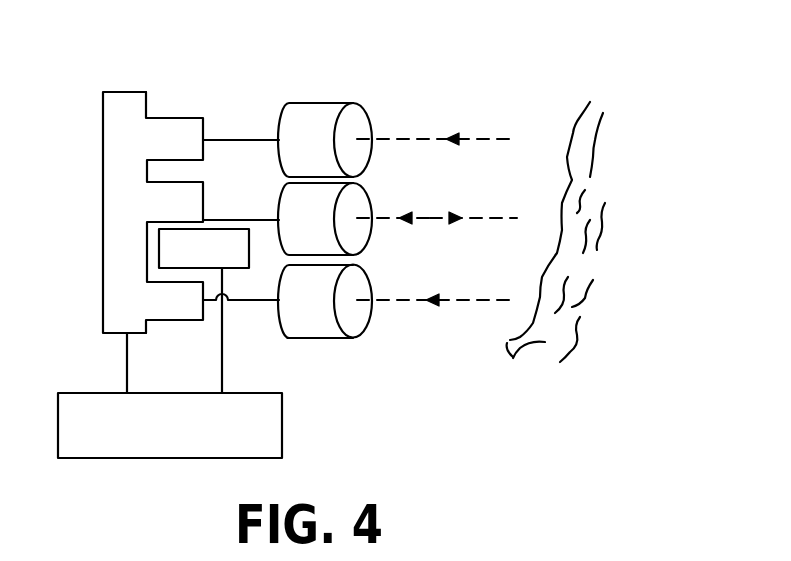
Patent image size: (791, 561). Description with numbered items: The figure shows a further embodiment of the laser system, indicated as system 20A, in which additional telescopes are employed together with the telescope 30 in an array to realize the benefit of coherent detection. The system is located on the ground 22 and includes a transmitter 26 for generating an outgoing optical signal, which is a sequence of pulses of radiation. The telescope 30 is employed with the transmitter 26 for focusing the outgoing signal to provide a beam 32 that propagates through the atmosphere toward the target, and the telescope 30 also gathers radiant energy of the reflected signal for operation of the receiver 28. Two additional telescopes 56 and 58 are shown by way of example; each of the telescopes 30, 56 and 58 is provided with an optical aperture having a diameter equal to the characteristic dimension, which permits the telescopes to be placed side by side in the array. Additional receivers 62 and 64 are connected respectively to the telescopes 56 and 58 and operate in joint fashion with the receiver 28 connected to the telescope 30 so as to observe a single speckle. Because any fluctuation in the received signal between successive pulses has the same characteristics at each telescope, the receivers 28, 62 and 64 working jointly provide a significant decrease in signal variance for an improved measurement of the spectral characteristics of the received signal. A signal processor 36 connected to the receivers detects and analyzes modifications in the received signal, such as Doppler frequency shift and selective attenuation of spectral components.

The system 20A is at (272, 86).
The receiver 62 is at (175, 117).
The receiver 28 is at (203, 187).
The receiver 64 is at (162, 321).
The transmitter 26 is at (230, 269).
The signal processor 36 is at (282, 425).
The telescope 56 is at (370, 117).
The telescope 30 is at (370, 197).
The telescope 58 is at (370, 278).
The beam 32 is at (433, 216).
The ground 22 is at (510, 340).